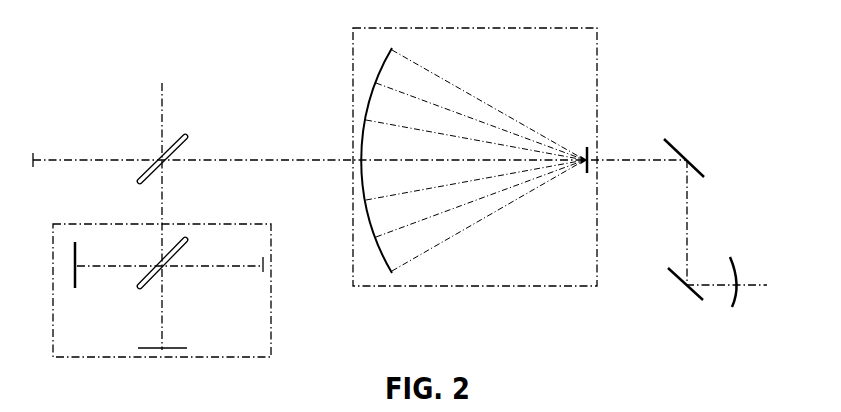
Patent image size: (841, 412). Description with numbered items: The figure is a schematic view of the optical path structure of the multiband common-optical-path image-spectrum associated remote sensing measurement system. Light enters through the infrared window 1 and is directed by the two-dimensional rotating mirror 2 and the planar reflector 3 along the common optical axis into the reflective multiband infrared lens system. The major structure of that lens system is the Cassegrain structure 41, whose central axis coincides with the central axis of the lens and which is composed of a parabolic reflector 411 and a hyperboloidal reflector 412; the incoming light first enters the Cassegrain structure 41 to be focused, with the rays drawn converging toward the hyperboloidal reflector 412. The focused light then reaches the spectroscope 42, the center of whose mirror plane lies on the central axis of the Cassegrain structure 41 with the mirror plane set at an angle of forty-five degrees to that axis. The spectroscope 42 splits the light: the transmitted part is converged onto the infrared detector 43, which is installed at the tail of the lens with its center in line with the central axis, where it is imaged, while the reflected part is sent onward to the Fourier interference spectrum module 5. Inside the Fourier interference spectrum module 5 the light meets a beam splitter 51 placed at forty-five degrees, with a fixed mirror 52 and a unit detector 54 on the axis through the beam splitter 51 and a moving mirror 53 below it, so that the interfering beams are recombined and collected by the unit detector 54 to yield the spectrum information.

The infrared window 1 is at (730, 257).
The two-dimensional rotating mirror 2 is at (669, 267).
The planar reflector 3 is at (677, 145).
The Cassegrain structure 41 is at (353, 286).
The parabolic reflector 411 is at (388, 60).
The hyperboloidal reflector 412 is at (585, 147).
The spectroscope 42 is at (190, 135).
The infrared detector 43 is at (33, 160).
The Fourier interference spectrum module 5 is at (271, 357).
The beam splitter 51 is at (187, 240).
The fixed mirror 52 is at (78, 242).
The moving mirror 53 is at (187, 348).
The unit detector 54 is at (264, 257).